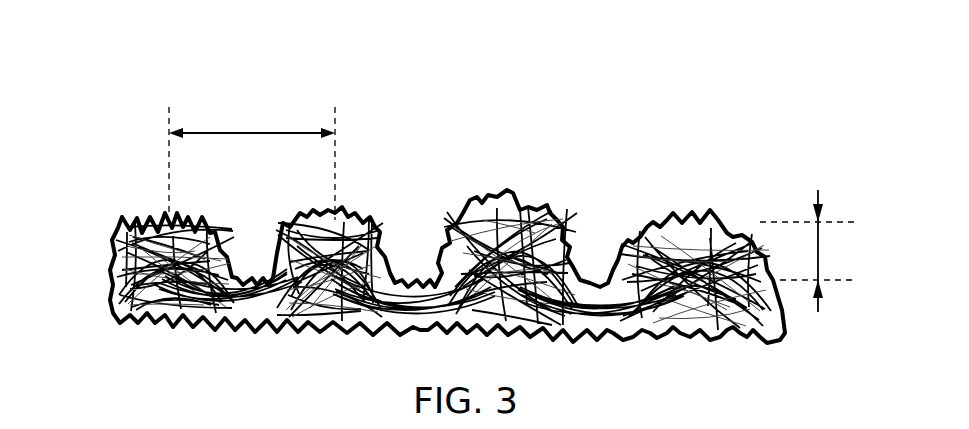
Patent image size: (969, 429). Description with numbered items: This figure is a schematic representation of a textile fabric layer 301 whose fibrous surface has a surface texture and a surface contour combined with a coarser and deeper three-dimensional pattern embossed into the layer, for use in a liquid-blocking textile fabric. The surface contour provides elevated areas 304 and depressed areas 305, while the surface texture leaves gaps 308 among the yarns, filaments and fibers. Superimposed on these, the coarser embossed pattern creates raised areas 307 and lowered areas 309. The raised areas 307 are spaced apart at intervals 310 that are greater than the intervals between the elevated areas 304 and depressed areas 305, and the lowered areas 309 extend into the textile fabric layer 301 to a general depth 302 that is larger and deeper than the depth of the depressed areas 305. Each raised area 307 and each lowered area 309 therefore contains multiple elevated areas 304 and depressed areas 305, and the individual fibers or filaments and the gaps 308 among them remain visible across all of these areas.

The textile fabric layer 301 is at (163, 73).
The depth 302 is at (818, 250).
The elevated areas 304 is at (508, 217).
The depressed areas 305 is at (460, 210).
The raised areas 307 is at (335, 208).
The gaps 308 is at (382, 217).
The lowered areas 309 is at (593, 277).
The intervals 310 is at (250, 131).